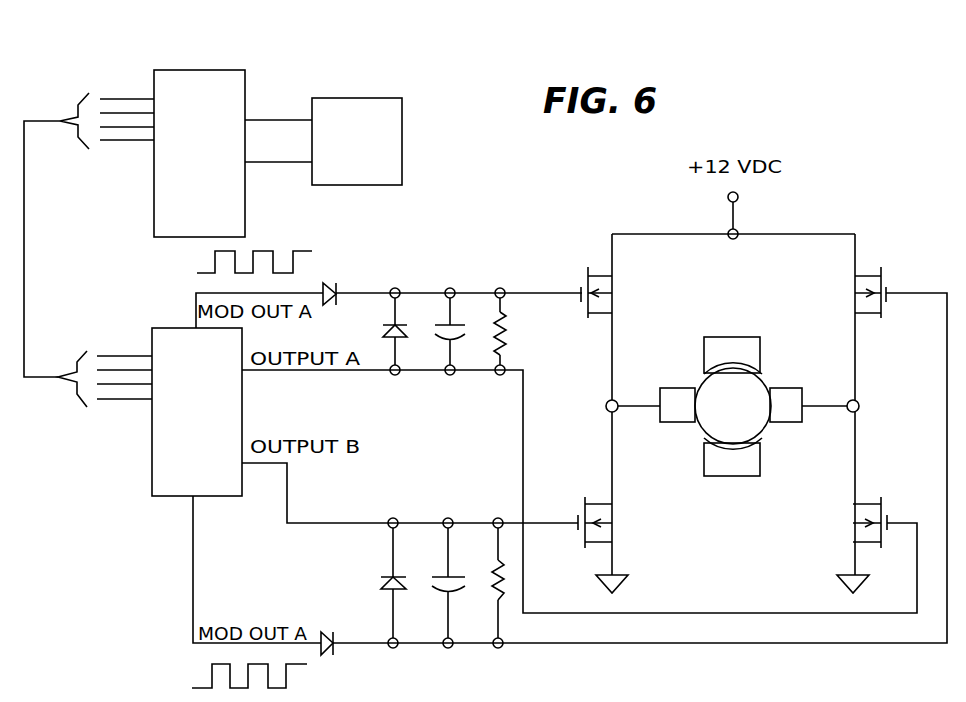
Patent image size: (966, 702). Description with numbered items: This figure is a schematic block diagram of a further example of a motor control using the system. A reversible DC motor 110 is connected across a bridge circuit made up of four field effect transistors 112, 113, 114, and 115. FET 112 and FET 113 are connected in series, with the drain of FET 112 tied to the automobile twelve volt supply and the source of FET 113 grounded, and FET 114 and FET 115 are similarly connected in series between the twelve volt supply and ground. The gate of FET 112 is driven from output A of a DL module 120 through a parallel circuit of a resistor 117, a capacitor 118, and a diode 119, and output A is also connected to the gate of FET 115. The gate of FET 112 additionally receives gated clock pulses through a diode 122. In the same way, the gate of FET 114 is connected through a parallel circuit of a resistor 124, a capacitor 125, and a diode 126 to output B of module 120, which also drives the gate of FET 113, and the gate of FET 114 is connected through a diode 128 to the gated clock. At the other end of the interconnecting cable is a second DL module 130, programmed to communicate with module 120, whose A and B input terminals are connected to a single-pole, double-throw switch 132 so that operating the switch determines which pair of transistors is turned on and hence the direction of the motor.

The reversible DC motor 110 is at (702, 430).
The field effect transistor 112 is at (612, 305).
The field effect transistor 113 is at (612, 532).
The field effect transistor 114 is at (855, 305).
The field effect transistor 115 is at (853, 530).
The resistor 117 is at (508, 328).
The capacitor 118 is at (459, 325).
The diode 119 is at (388, 343).
The DL module 120 is at (195, 497).
The diode 122 is at (338, 290).
The resistor 124 is at (505, 590).
The capacitor 125 is at (458, 587).
The diode 126 is at (380, 583).
The diode 128 is at (333, 647).
The DL module 130 is at (205, 69).
The single-pole, double-throw switch 132 is at (363, 97).